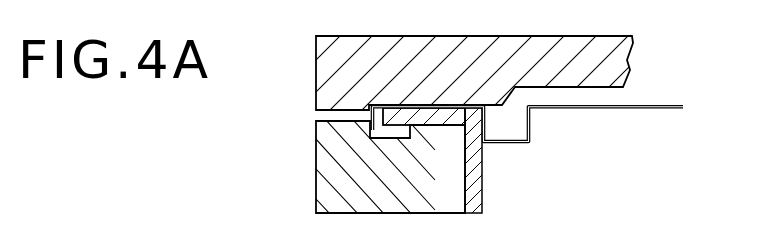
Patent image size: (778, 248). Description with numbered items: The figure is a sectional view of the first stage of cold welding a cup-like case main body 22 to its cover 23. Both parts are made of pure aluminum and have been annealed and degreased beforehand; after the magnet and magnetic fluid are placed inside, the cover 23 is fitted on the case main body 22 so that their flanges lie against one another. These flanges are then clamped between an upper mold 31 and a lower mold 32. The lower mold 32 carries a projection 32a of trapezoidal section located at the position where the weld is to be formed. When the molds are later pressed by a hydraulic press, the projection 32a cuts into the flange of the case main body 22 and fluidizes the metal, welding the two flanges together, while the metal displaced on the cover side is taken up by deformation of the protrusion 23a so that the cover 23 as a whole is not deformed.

The upper mold 31 is at (327, 71).
The lower mold 32 is at (327, 158).
The projection 32a is at (421, 128).
The cover 23 is at (580, 110).
The protrusion 23a is at (528, 145).
The case main body 22 is at (482, 207).